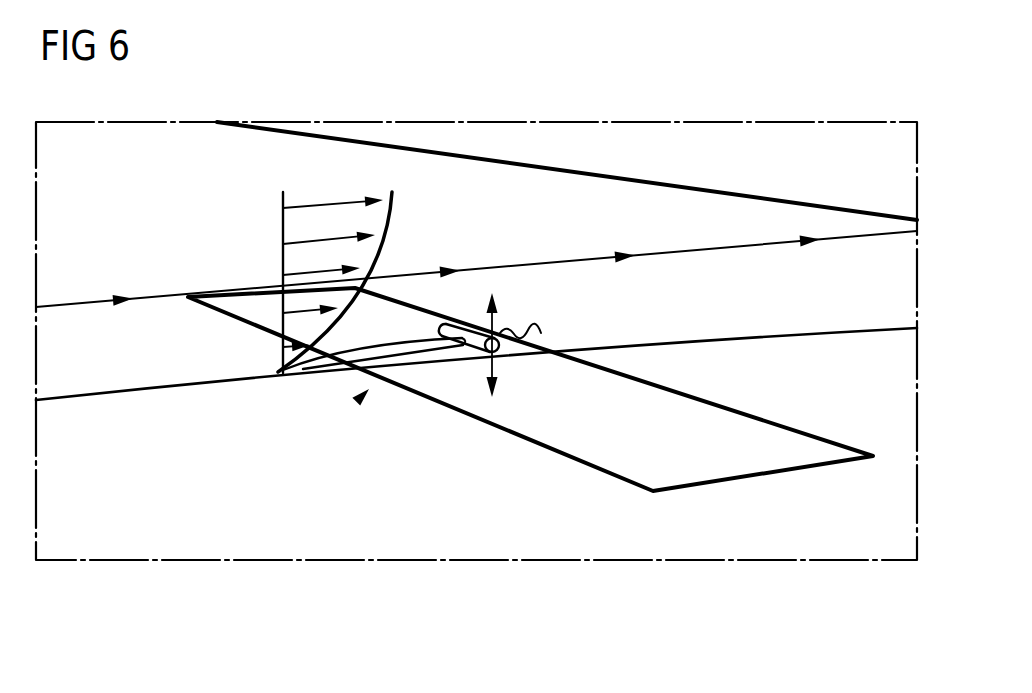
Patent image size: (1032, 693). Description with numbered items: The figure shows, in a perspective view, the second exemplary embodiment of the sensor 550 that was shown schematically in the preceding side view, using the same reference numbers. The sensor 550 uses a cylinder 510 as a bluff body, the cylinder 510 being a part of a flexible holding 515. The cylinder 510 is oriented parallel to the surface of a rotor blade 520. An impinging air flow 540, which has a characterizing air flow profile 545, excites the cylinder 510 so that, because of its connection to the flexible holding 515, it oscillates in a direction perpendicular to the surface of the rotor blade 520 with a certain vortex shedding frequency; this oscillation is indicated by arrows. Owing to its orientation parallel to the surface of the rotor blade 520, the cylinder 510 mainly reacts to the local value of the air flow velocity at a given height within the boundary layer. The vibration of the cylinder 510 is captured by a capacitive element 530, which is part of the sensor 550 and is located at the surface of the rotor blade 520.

The cylinder 510 is at (450, 323).
The flexible holding 515 is at (377, 352).
The rotor blade 520 is at (813, 555).
The capacitive element 530 is at (541, 438).
The air flow 540 is at (577, 258).
The air flow profile 545 is at (308, 183).
The sensor 550 is at (359, 399).